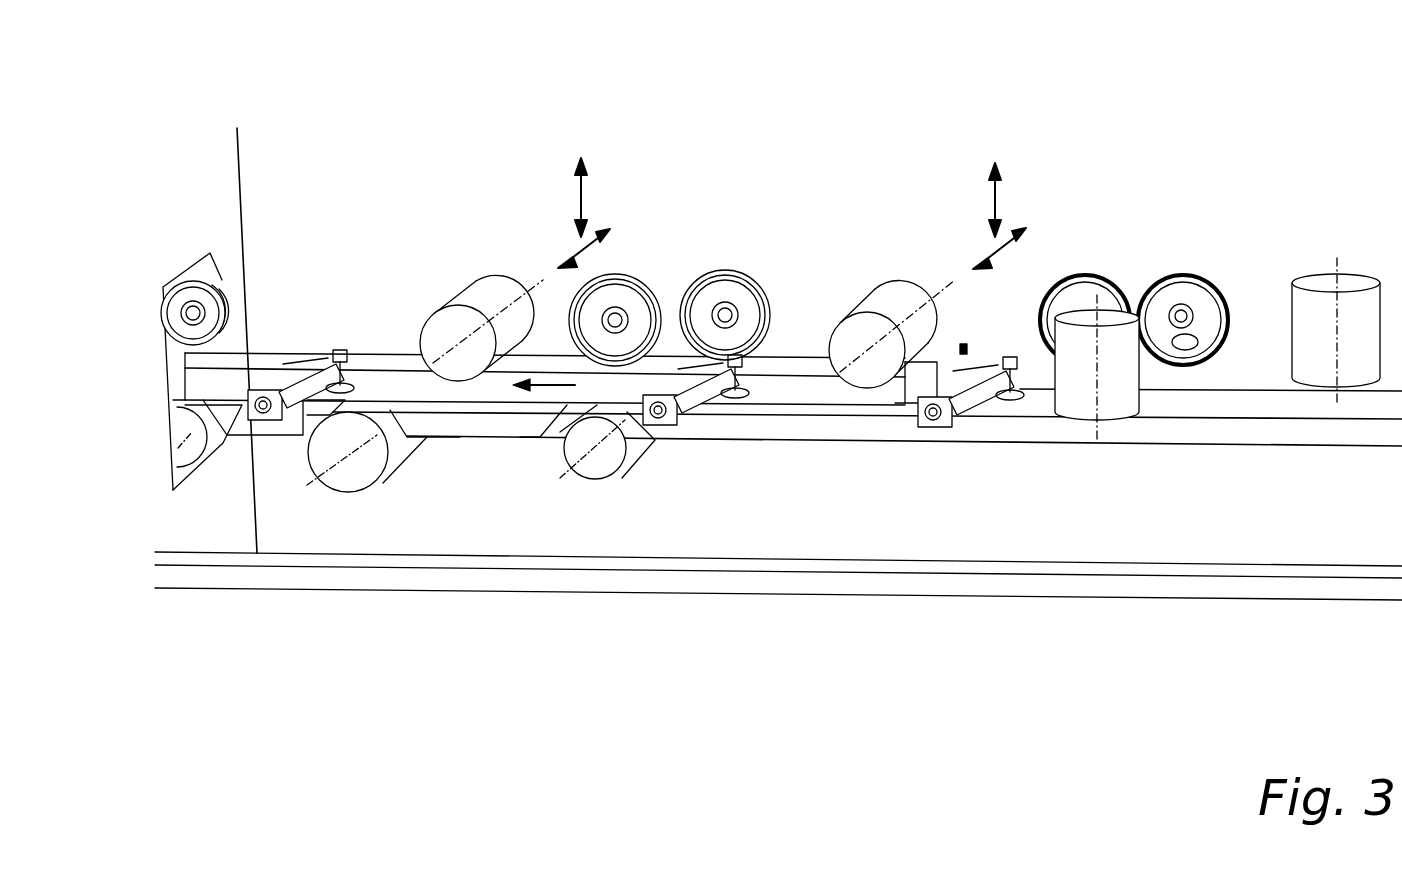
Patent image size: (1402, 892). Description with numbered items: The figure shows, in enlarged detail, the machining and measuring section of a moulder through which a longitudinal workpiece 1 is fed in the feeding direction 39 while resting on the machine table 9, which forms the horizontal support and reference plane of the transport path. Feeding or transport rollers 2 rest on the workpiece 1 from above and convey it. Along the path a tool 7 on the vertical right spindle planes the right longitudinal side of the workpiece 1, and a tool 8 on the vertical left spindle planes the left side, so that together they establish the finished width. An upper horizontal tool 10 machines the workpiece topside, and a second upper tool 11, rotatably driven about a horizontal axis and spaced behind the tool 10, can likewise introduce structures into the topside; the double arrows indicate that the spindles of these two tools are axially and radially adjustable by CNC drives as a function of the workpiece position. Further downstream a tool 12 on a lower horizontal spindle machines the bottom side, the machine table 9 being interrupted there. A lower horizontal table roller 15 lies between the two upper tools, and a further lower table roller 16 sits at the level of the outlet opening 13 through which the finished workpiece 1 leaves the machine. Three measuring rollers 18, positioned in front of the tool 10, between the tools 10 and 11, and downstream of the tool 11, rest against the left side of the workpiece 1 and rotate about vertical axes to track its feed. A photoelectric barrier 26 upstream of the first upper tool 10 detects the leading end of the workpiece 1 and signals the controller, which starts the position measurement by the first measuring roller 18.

The workpiece 1 is at (793, 370).
The transport roller 2 is at (210, 307).
The tool 7 is at (1323, 325).
The tool 8 is at (1083, 402).
The machine table 9 is at (1255, 412).
The tool 10 is at (862, 338).
The second upper tool 11 is at (457, 332).
The tool 12 is at (358, 477).
The outlet opening 13 is at (177, 376).
The lower horizontal table roller 15 is at (605, 470).
The horizontal lower table roller 16 is at (180, 472).
The measuring roller 18 is at (355, 352).
The photoelectric barrier 26 is at (968, 345).
The feeding direction 39 is at (547, 393).